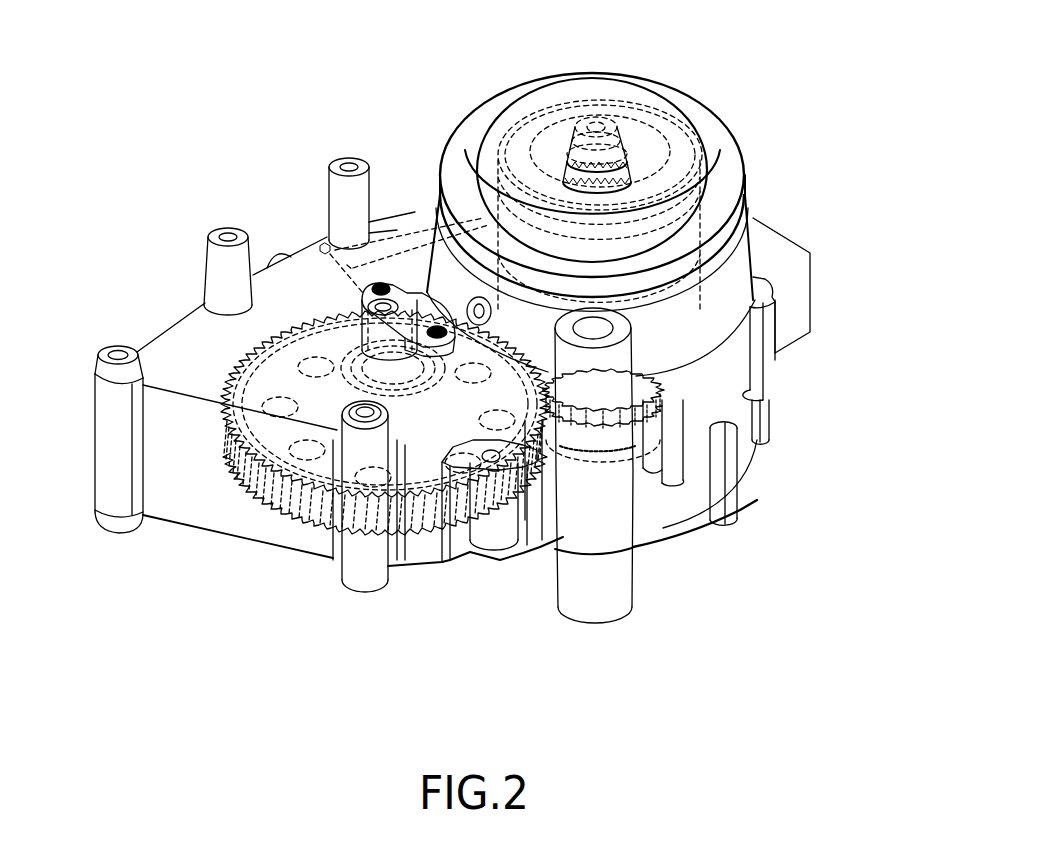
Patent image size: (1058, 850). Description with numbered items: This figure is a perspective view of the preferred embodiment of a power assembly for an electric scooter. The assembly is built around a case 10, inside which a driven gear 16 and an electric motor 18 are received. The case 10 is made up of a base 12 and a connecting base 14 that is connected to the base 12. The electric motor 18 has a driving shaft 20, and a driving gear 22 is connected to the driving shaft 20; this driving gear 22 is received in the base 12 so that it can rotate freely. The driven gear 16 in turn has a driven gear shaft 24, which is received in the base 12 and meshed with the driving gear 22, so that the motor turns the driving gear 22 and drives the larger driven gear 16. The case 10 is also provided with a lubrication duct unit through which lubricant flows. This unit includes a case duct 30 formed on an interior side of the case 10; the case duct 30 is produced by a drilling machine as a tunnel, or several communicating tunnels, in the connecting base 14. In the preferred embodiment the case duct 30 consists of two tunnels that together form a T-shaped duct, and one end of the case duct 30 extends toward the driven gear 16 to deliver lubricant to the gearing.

The case 10 is at (180, 287).
The base 12 is at (660, 528).
The connecting base 14 is at (782, 247).
The driven gear 16 is at (262, 492).
The electric motor 18 is at (705, 218).
The driving shaft 20 is at (625, 182).
The driving gear 22 is at (752, 440).
The driven gear shaft 24 is at (386, 370).
The case duct 30 is at (396, 250).